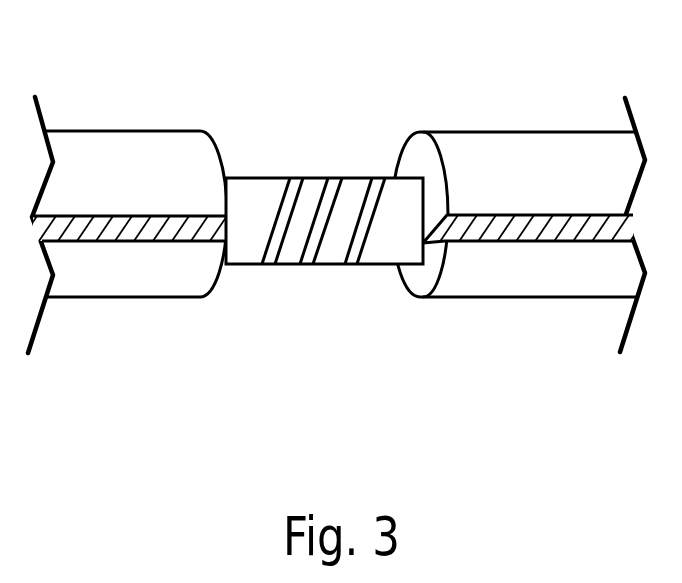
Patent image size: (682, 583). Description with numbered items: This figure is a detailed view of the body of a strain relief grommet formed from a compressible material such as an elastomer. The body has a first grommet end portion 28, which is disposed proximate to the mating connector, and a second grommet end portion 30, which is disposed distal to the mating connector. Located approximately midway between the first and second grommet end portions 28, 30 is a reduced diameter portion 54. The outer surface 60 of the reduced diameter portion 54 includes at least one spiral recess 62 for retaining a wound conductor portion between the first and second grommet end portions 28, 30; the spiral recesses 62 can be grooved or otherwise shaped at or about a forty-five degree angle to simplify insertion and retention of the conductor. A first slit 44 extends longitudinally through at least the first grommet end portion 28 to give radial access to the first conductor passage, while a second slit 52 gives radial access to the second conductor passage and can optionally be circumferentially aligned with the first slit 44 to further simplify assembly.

The first grommet end portion 28 is at (559, 152).
The second grommet end portion 30 is at (138, 130).
The first slit 44 is at (535, 242).
The second slit 52 is at (138, 242).
The reduced diameter portion 54 is at (315, 177).
The outer surface 60 is at (262, 216).
The spiral recess 62 is at (268, 252).